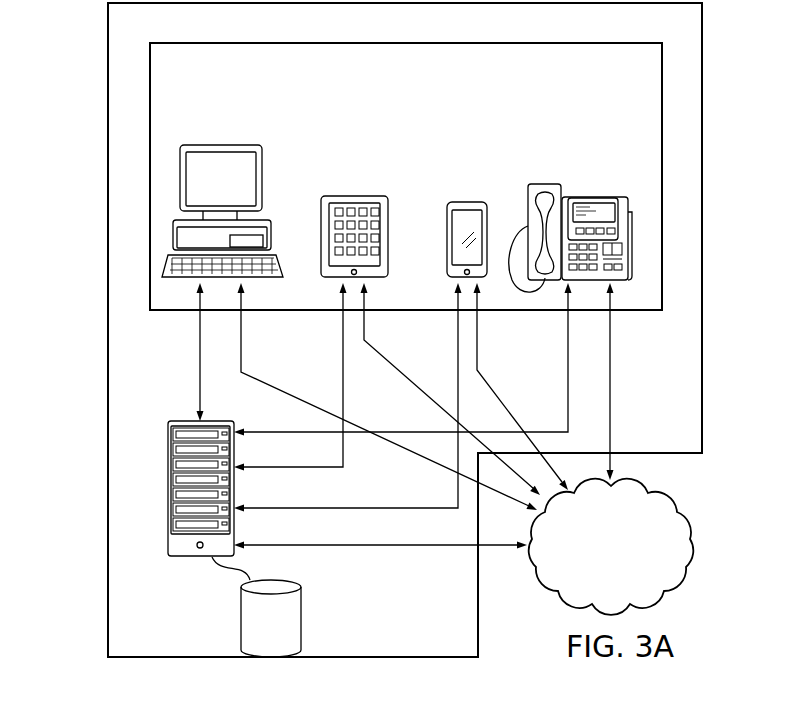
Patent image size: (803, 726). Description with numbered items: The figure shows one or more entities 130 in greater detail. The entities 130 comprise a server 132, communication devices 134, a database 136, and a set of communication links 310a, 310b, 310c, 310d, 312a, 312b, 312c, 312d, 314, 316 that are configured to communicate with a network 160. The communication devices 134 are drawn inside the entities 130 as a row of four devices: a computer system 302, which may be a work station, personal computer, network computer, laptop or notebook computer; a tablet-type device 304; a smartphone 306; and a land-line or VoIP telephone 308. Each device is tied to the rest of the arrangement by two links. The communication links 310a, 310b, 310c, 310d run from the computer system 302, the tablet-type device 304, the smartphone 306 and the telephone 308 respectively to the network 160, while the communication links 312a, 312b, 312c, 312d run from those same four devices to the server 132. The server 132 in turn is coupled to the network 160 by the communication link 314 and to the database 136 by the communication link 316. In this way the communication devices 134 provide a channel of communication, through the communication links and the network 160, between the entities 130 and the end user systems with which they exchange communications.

The one or more entities 130 is at (104, 173).
The communication devices 134 is at (582, 91).
The computer system 302 is at (220, 142).
The tablet-type device 304 is at (352, 195).
The smartphone 306 is at (468, 200).
The land-line or VoIP telephone 308 is at (596, 195).
The communication link 310a is at (243, 330).
The communication link 310b is at (368, 323).
The communication link 310c is at (480, 330).
The communication link 310d is at (612, 390).
The communication link 312a is at (200, 360).
The communication link 312b is at (347, 397).
The communication link 312c is at (395, 508).
The communication link 312d is at (547, 428).
The communication link 314 is at (382, 547).
The communication link 316 is at (252, 578).
The server 132 is at (190, 558).
The database 136 is at (301, 625).
The network 160 is at (695, 565).